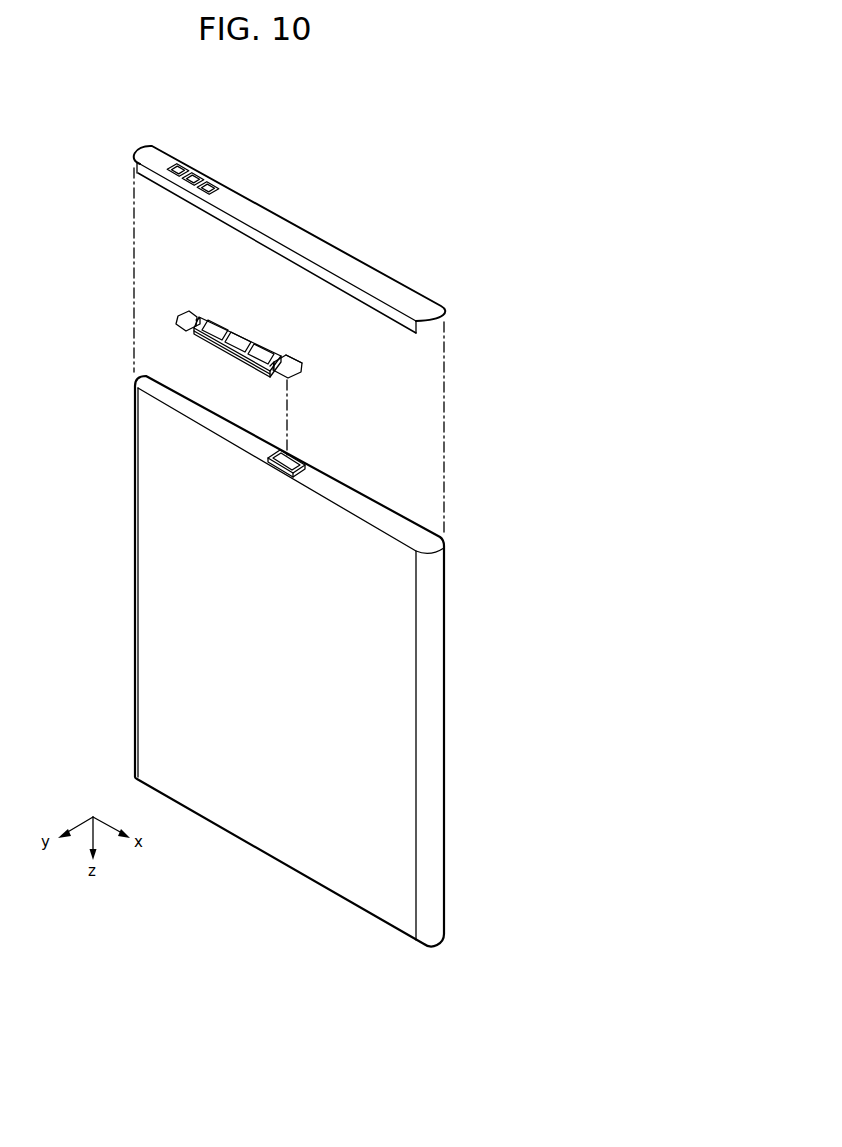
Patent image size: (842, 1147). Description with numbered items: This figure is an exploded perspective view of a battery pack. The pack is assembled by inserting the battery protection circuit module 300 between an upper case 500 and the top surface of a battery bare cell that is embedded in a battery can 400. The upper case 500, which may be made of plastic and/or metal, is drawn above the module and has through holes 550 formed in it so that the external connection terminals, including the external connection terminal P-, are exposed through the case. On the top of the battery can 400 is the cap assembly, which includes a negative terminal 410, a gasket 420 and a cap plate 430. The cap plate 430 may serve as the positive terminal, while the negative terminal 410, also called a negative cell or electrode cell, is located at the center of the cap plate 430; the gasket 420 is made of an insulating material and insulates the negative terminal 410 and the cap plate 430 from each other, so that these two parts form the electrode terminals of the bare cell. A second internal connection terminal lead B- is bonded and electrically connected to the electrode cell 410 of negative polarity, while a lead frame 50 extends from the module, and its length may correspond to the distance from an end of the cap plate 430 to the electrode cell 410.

The battery can 400 is at (128, 618).
The negative terminal 410 is at (293, 456).
The gasket 420 is at (288, 465).
The cap plate 430 is at (374, 508).
The upper case 500 is at (325, 231).
The through holes 550 is at (204, 172).
The protection circuit board 300 is at (257, 331).
The lead frame 50 is at (188, 316).
The external connection terminal P- is at (247, 340).
The second internal connection terminal lead B- is at (292, 370).